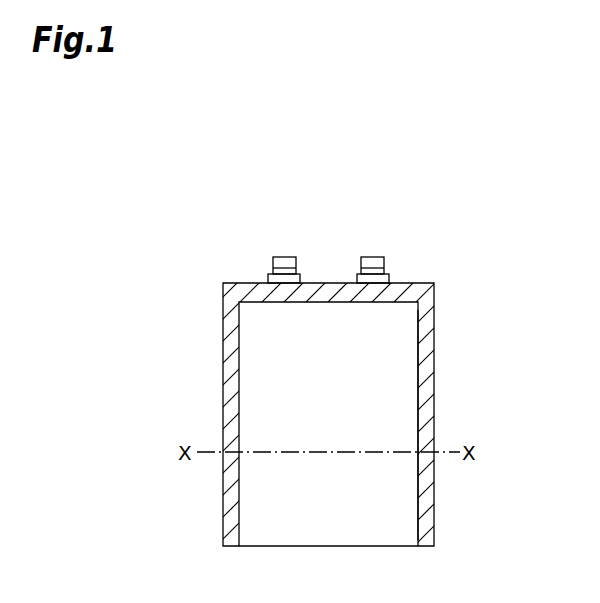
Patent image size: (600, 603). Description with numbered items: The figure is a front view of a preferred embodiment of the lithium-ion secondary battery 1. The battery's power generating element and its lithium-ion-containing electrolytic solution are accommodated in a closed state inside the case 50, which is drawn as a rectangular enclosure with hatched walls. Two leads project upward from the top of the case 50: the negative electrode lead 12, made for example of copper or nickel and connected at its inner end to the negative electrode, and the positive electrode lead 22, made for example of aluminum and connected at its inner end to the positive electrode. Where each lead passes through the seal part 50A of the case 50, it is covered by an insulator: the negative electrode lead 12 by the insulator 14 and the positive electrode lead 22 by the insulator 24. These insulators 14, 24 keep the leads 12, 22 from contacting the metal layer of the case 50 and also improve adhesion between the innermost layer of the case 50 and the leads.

The lithium-ion secondary battery 1 is at (425, 208).
The negative electrode lead 12 is at (283, 256).
The insulator 14 is at (268, 280).
The positive electrode lead 22 is at (372, 256).
The insulator 24 is at (357, 280).
The case 50 is at (433, 397).
The seal part 50A is at (423, 323).